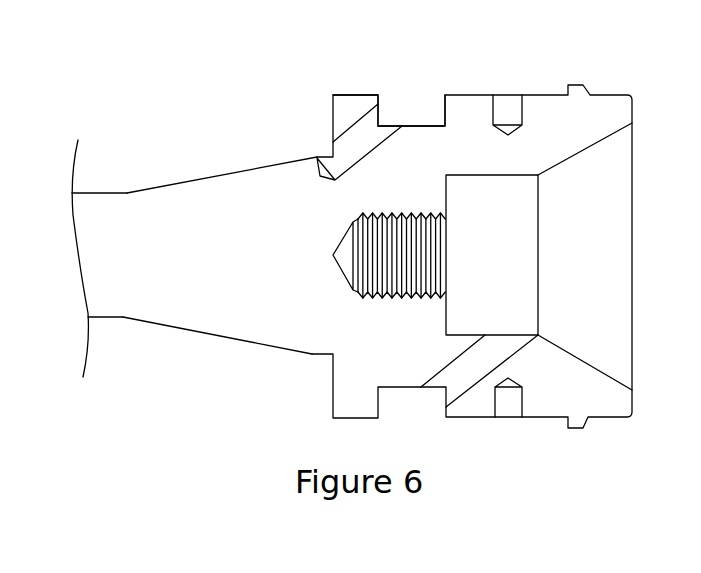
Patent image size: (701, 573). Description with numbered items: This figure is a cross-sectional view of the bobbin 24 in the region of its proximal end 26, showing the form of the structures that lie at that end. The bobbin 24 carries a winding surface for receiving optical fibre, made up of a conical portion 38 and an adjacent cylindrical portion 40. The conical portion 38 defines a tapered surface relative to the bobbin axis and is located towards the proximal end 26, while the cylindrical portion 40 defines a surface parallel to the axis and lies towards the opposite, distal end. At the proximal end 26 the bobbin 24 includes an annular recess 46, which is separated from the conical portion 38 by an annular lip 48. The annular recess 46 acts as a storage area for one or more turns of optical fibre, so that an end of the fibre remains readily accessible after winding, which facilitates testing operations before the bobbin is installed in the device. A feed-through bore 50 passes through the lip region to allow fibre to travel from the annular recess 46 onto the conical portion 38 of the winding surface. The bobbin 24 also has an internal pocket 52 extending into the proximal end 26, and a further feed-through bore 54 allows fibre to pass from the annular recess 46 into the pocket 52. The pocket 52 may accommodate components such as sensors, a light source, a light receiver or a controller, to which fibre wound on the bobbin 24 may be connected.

The bobbin 24 is at (122, 307).
The proximal end 26 is at (600, 110).
The conical portion 38 is at (182, 183).
The cylindrical portion 40 is at (100, 192).
The annular recess 46 is at (412, 117).
The annular lip 48 is at (360, 103).
The feed-through bore 50 is at (347, 152).
The internal pocket 52 is at (512, 247).
The further feed-through bore 54 is at (468, 365).